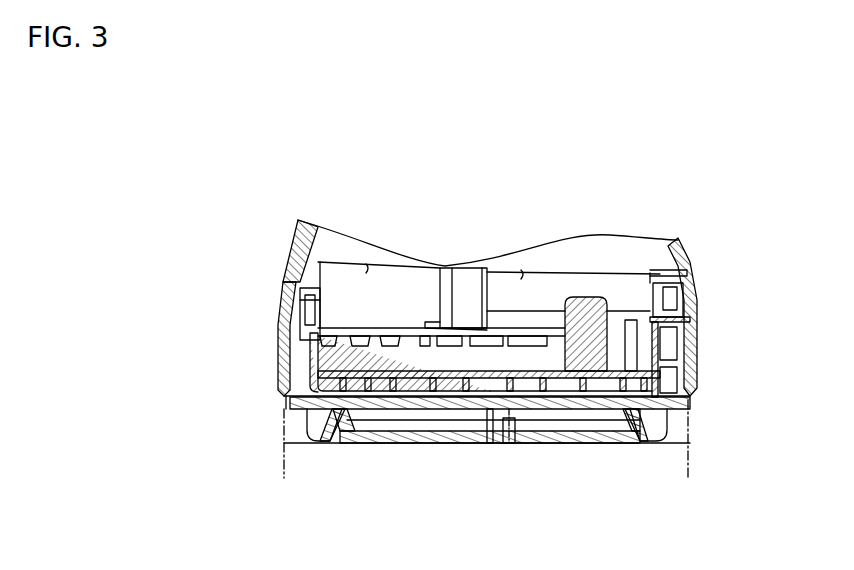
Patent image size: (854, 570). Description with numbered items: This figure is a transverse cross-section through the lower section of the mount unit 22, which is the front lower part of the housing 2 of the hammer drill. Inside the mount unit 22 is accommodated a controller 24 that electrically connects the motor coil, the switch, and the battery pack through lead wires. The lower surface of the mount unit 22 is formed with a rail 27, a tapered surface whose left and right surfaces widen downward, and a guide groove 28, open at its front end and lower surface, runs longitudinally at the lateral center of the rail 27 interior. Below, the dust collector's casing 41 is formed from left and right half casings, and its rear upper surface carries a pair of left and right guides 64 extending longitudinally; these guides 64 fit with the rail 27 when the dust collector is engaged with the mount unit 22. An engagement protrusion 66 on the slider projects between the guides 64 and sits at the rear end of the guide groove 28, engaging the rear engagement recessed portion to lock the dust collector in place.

The housing 2 is at (690, 262).
The mount unit 22 is at (697, 380).
The controller 24 is at (405, 360).
The rail 27 is at (413, 444).
The guide groove 28 is at (492, 444).
The casing 41 is at (675, 465).
The guides 64 is at (297, 423).
The engagement protrusion 66 is at (508, 450).